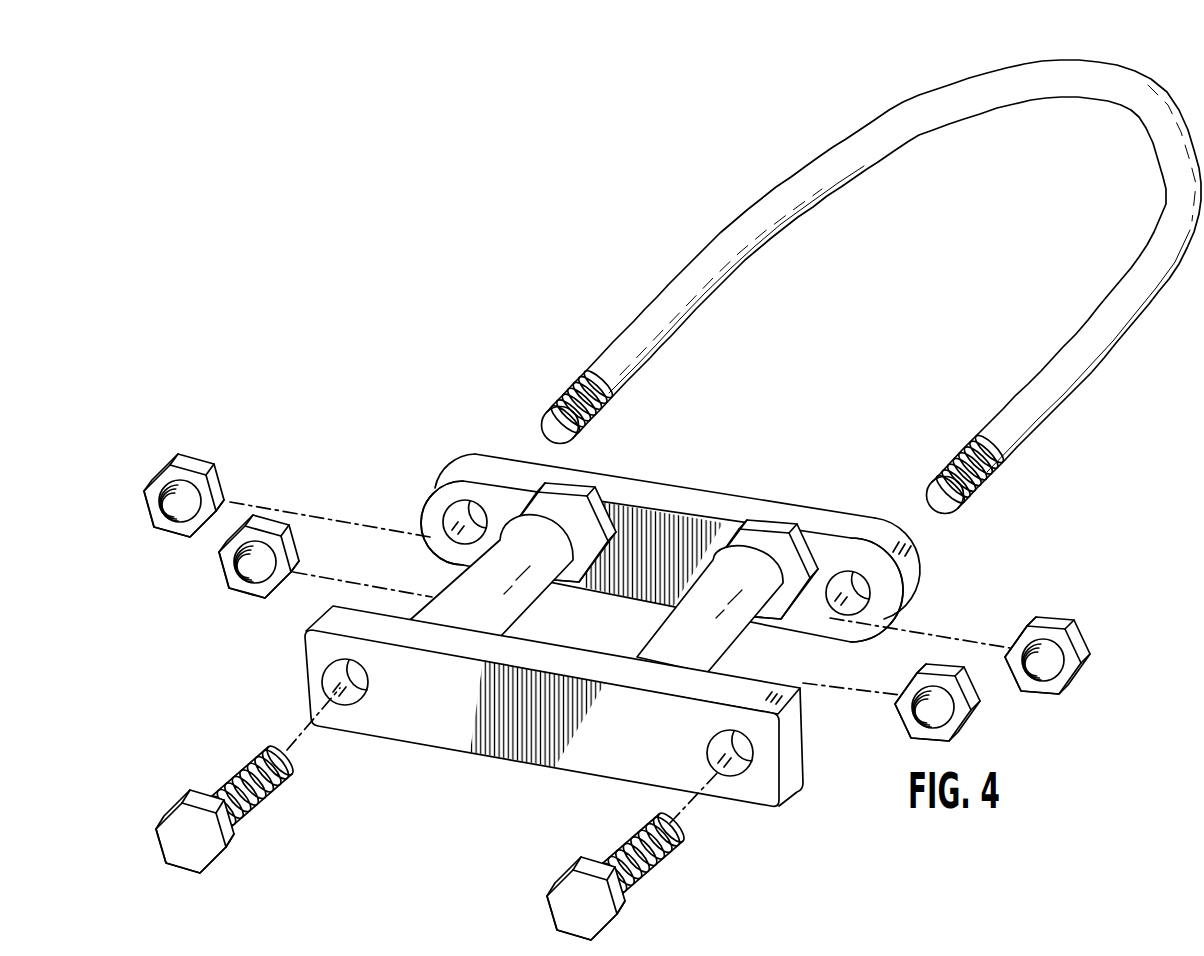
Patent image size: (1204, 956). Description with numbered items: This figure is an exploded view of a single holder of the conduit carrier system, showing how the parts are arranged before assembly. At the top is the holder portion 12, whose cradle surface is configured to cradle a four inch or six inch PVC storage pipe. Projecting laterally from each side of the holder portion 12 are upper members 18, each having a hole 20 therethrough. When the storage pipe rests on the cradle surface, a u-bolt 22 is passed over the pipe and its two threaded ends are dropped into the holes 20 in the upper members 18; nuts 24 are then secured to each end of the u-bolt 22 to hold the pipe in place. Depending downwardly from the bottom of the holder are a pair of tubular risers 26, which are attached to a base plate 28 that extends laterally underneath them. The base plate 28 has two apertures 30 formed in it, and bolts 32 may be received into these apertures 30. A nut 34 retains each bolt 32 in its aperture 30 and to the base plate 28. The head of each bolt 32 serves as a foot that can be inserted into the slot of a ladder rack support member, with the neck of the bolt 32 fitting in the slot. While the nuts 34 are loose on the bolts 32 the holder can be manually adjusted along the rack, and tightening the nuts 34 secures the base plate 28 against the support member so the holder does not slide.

The holder portion 12 is at (713, 505).
The upper members 18 is at (477, 490).
The hole 20 is at (443, 530).
The u-bolt 22 is at (828, 146).
The nuts 24 is at (175, 478).
The tubular risers 26 is at (528, 603).
The base plate 28 is at (442, 712).
The apertures 30 is at (322, 680).
The bolts 32 is at (250, 815).
The nut 34 is at (228, 560).